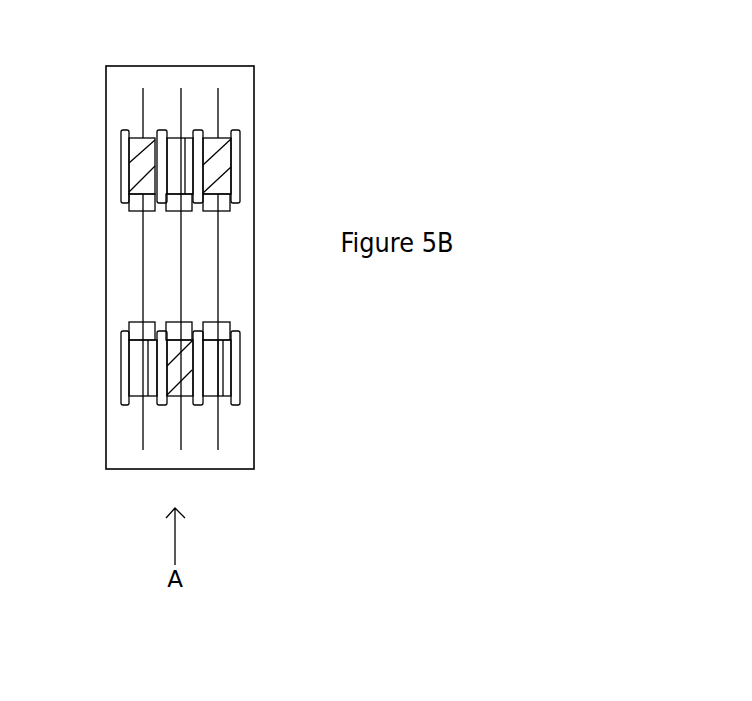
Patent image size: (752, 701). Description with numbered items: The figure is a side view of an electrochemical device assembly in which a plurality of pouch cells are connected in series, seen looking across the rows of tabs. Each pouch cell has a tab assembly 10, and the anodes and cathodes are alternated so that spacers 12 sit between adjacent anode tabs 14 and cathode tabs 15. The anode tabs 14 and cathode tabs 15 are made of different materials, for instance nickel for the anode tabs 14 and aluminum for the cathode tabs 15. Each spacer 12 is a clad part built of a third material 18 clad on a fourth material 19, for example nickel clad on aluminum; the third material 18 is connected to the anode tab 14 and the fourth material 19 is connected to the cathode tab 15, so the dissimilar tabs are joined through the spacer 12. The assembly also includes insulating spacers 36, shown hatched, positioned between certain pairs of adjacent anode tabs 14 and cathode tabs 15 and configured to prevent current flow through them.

The tab assembly 10 is at (112, 102).
The spacer 12 is at (191, 213).
The anode tab 14 is at (125, 130).
The cathode tab 15 is at (162, 130).
The third material 18 is at (225, 361).
The fourth material 19 is at (210, 388).
The insulating spacer 36 is at (132, 213).